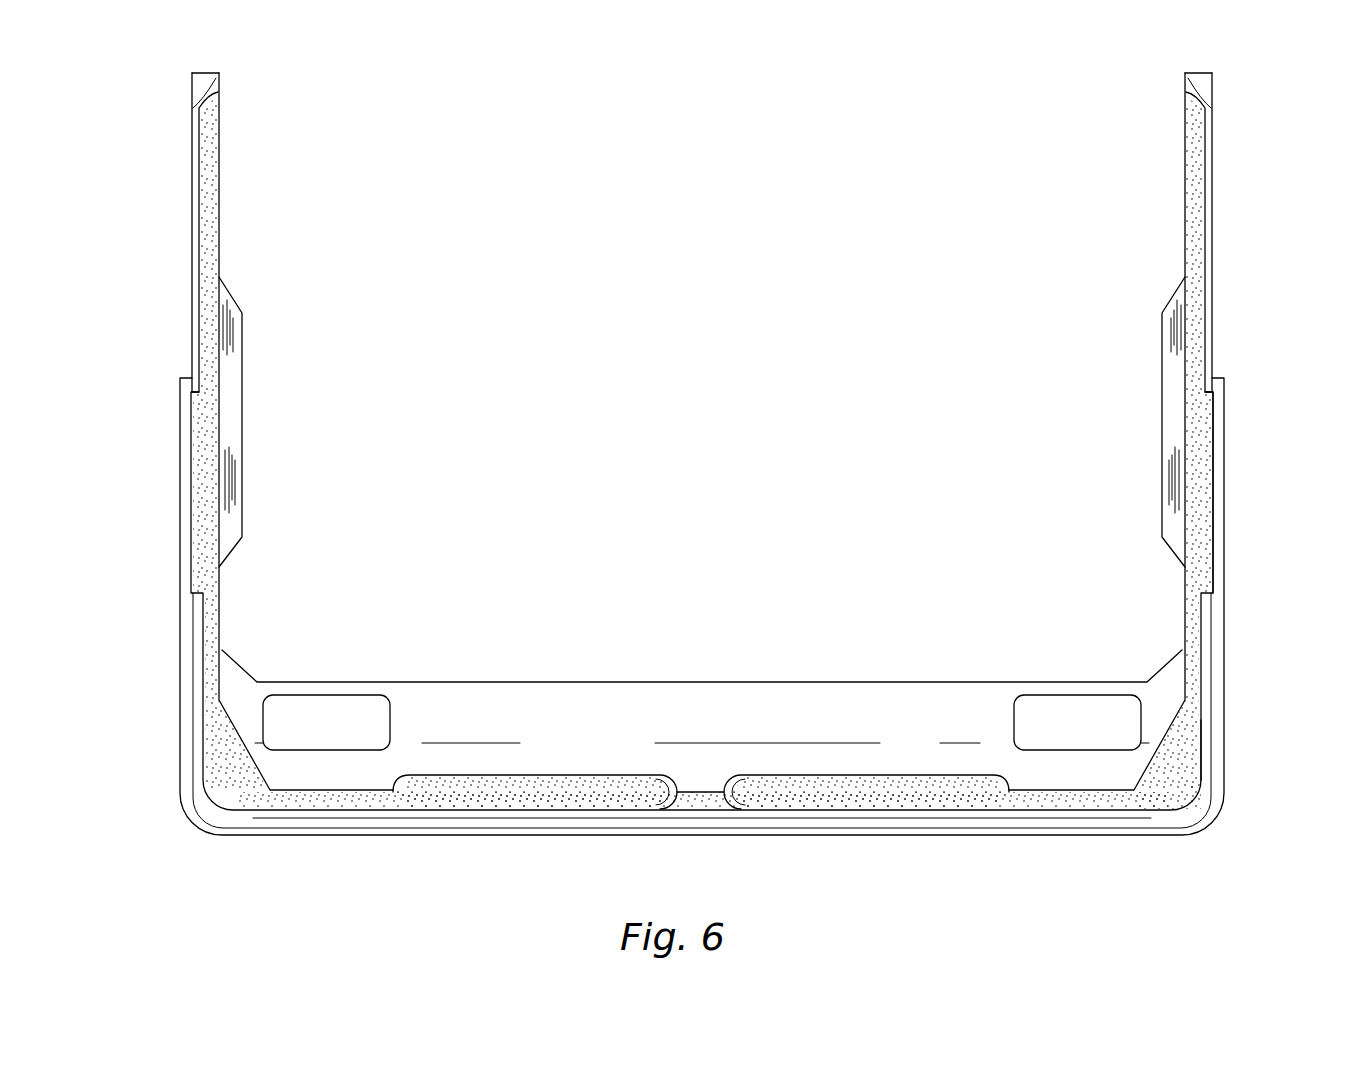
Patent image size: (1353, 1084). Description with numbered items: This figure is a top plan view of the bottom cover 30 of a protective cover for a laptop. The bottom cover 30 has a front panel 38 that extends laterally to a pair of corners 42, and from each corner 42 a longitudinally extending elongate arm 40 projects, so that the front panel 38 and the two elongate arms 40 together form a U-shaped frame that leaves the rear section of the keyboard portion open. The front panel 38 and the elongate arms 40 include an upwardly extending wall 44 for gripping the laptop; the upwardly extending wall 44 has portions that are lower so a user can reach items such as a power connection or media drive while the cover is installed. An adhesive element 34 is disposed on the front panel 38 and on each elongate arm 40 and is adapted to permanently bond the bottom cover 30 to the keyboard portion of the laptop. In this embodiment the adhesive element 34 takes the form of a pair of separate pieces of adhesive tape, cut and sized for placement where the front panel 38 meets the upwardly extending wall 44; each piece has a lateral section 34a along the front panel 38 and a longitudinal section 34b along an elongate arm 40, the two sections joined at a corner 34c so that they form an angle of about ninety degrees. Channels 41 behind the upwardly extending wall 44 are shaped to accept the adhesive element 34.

The bottom cover 30 is at (740, 80).
The adhesive element 34 is at (750, 800).
The lateral section 34a is at (865, 795).
The longitudinal section 34b is at (1195, 527).
The corner 34c is at (1188, 772).
The front panel 38 is at (773, 708).
The elongate arms 40 is at (197, 308).
The channels 41 is at (723, 783).
The corners 42 is at (199, 809).
The upwardly extending wall 44 is at (181, 543).